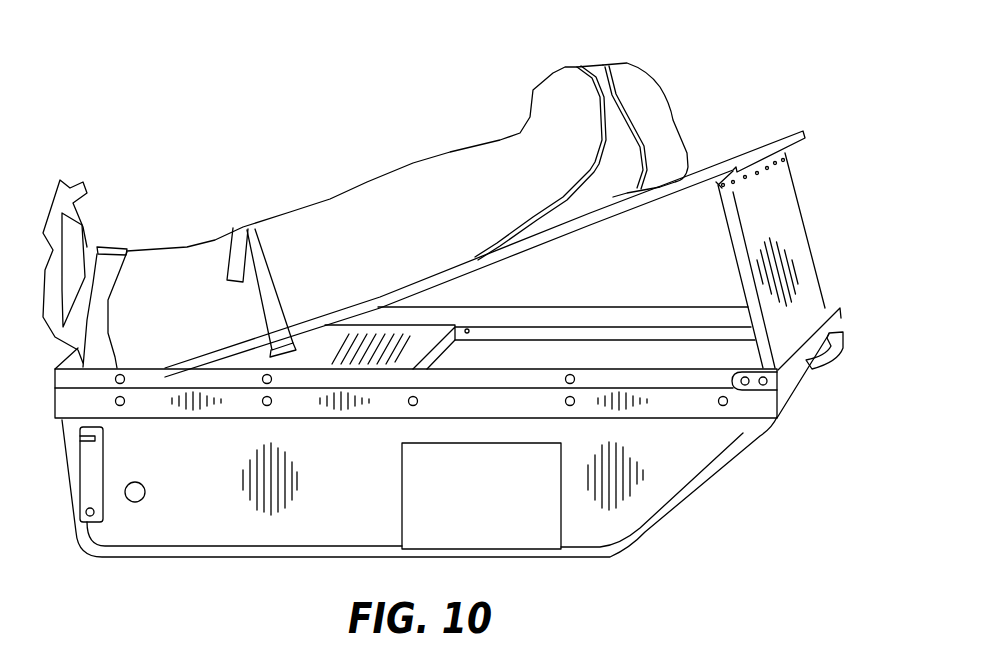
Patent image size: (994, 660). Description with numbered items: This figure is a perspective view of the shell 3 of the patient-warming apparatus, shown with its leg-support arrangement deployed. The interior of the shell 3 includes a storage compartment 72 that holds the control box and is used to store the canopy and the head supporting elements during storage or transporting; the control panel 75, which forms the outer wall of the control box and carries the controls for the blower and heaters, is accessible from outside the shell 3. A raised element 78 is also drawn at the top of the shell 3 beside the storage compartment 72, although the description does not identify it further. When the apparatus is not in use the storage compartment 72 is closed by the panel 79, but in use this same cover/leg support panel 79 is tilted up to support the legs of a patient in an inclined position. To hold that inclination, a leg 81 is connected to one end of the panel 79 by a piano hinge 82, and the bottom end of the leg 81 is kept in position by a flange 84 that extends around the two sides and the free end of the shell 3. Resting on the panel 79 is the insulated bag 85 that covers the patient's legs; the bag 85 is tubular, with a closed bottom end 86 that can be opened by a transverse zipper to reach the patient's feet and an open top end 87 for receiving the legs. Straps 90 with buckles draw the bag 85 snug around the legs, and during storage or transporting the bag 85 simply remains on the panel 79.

The shell 3 is at (165, 558).
The storage compartment 72 is at (627, 350).
The control panel 75 is at (456, 498).
The platform 78 is at (430, 333).
The panel 79 is at (567, 233).
The leg 81 is at (780, 193).
The piano hinge 82 is at (716, 193).
The flange 84 is at (837, 323).
The insulated bag 85 is at (368, 188).
The closed bottom end 86 is at (640, 82).
The open top end 87 is at (88, 252).
The straps 90 is at (241, 243).